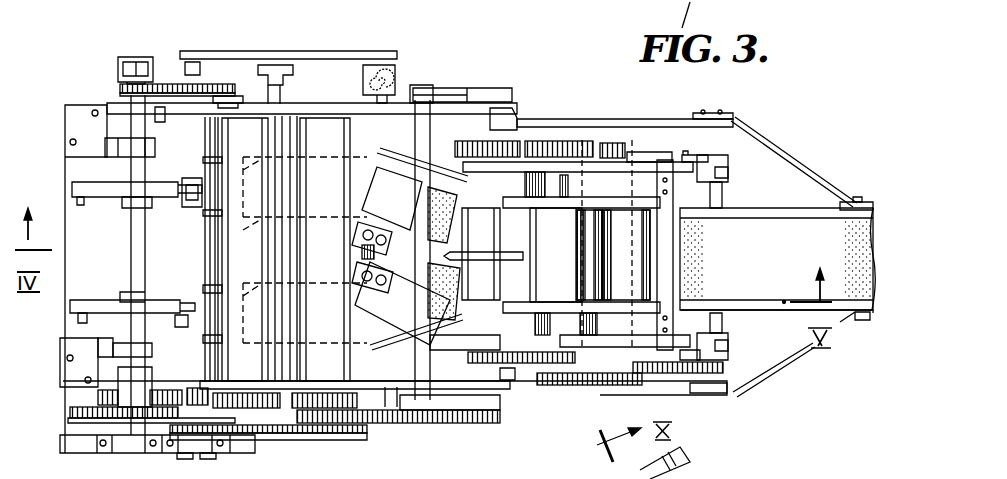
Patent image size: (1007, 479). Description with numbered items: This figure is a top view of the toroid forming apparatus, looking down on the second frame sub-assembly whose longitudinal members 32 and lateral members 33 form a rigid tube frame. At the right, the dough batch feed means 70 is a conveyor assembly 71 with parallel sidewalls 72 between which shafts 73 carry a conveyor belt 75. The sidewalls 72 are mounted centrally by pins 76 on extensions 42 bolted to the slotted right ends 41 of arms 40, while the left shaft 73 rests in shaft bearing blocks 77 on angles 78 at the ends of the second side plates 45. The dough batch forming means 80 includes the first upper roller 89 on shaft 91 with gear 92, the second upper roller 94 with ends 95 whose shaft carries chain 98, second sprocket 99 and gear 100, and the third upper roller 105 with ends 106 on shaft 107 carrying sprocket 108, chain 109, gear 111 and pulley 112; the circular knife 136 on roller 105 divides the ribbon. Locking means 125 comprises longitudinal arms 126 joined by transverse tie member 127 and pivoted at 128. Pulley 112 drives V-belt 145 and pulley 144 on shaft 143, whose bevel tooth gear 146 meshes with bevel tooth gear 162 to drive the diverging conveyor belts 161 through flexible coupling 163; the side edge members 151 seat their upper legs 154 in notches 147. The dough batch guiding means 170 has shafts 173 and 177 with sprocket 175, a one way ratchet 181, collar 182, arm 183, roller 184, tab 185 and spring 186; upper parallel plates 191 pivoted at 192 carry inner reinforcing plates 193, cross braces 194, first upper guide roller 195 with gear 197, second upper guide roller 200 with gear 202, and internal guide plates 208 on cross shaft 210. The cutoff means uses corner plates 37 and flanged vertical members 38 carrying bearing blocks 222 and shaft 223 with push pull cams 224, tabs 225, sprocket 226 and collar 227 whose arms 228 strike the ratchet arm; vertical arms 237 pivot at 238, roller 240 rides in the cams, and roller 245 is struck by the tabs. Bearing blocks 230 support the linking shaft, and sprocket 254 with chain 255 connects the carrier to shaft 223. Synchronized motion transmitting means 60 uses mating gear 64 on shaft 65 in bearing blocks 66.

The longitudinal members 32 is at (122, 110).
The lateral members 33 is at (70, 219).
The corner plates 37 is at (122, 136).
The flanged vertical members 38 is at (72, 157).
The arm 40 is at (681, 114).
The slotted right end 41 is at (737, 119).
The extension 42 is at (796, 175).
The second side plates 45 is at (548, 150).
The synchronized motion transmitting means 60 is at (186, 387).
The mating gear 64 is at (184, 392).
The shaft 65 is at (185, 430).
The bearing blocks 66 is at (205, 455).
The dough batch feed means 70 is at (771, 449).
The conveyor assembly 71 is at (819, 208).
The sidewalls 72 is at (764, 210).
The shafts 73 is at (722, 200).
The conveyor belt 75 is at (777, 259).
The pins 76 is at (863, 196).
The shaft bearing blocks 77 is at (724, 173).
The angles 78 is at (726, 163).
The dough batch forming means 80 is at (639, 138).
The first upper roller 89 is at (688, 471).
The shaft 91 is at (625, 475).
The gear 92 is at (655, 144).
The second upper roller 94 is at (565, 262).
The ends 95 is at (580, 200).
The chain 98 is at (590, 385).
The second sprocket 99 is at (570, 390).
The gear 100 is at (580, 145).
The third upper roller 105 is at (480, 478).
The ends 106 is at (518, 210).
The shaft 107 is at (495, 400).
The sprocket 108 is at (480, 350).
The chain 109 is at (490, 371).
The gear 111 is at (512, 150).
The pulley 112 is at (493, 82).
The locking means 125 is at (675, 193).
The longitudinal arms 126 is at (598, 150).
The transverse tie member 127 is at (673, 234).
The pivot 128 is at (685, 153).
The circular knife 136 is at (475, 478).
The shaft 143 is at (450, 140).
The pulley 144 is at (431, 85).
The V-belt 145 is at (495, 95).
The bevel tooth gear 146 is at (488, 73).
The notch 147 is at (395, 404).
The side edge members 151 is at (470, 315).
The upper leg 154 is at (371, 406).
The diverging conveyor belts 161 is at (407, 258).
The bevel tooth gear 162 is at (383, 133).
The flexible coupling 163 is at (360, 256).
The dough batch guiding means 170 is at (304, 102).
The shaft 173 is at (352, 425).
The sprocket 175 is at (343, 434).
The shaft 177 is at (281, 80).
The one way ratchet 181 is at (290, 66).
The collar 182 is at (263, 65).
The arm 183 is at (213, 50).
The roller 184 is at (182, 63).
The tab 185 is at (383, 78).
The spring 186 is at (372, 65).
The upper parallel plates 191 is at (316, 110).
The pivot 192 is at (495, 120).
The inner reinforcing plates 193 is at (511, 118).
The cross braces 194 is at (450, 227).
The first upper guide roller 195 is at (338, 252).
The gear 197 is at (386, 388).
The second upper guide roller 200 is at (258, 252).
The gear 202 is at (283, 408).
The internal guide plates 208 is at (320, 212).
The cross shaft 210 is at (290, 276).
The bearing blocks 222 is at (78, 118).
The shaft 223 is at (130, 273).
The push pull cams 224 is at (93, 187).
The tabs 225 is at (78, 200).
The sprocket 226 is at (120, 86).
The collar 227 is at (150, 57).
The arms 228 is at (121, 66).
The bearing blocks 230 is at (115, 450).
The vertical arms 237 is at (204, 150).
The pivot 238 is at (205, 254).
The roller 240 is at (183, 293).
The roller 245 is at (196, 204).
The sprocket 254 is at (241, 92).
The chain 255 is at (167, 100).